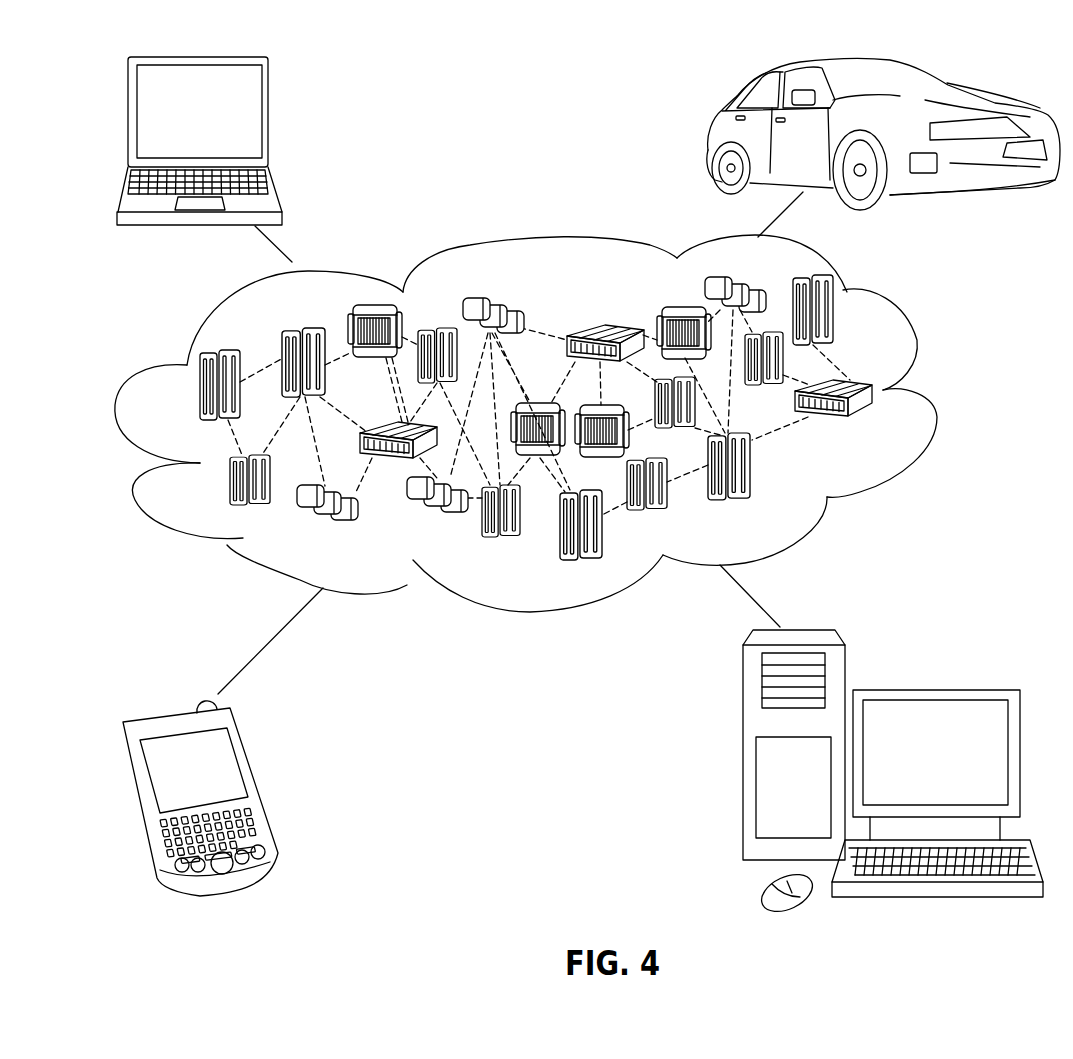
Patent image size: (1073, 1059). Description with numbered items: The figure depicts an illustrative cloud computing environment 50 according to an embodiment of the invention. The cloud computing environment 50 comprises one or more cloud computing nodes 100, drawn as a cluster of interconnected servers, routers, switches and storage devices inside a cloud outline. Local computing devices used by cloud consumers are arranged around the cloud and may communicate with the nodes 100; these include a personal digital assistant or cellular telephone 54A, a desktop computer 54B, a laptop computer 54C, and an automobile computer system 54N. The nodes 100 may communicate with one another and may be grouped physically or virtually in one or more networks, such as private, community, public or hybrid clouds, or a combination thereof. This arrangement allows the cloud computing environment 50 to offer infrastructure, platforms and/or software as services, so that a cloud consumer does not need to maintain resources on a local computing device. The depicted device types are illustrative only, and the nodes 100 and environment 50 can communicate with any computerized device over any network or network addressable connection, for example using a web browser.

The cloud computing environment 50 is at (932, 397).
The cloud computing nodes 100 is at (880, 428).
The personal digital assistant (PDA) or cellular telephone 54A is at (262, 784).
The desktop computer 54B is at (934, 690).
The laptop computer 54C is at (270, 122).
The automobile computer system 54N is at (711, 137).